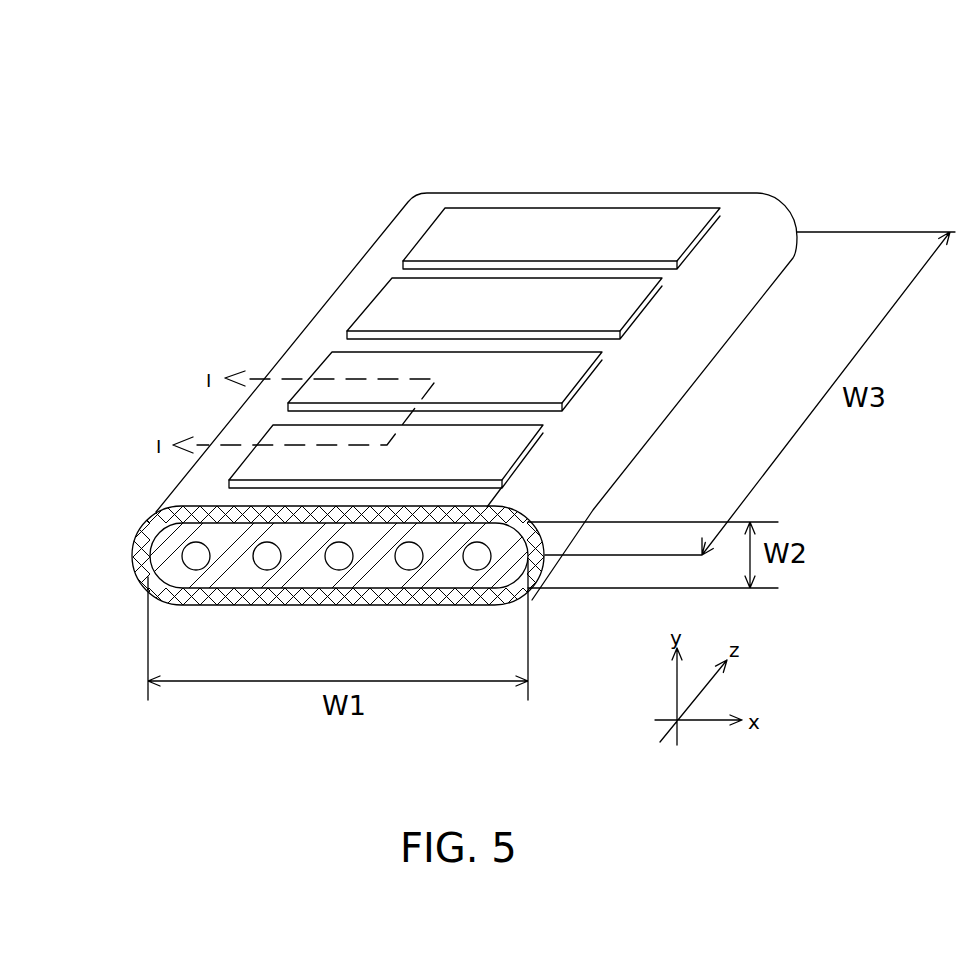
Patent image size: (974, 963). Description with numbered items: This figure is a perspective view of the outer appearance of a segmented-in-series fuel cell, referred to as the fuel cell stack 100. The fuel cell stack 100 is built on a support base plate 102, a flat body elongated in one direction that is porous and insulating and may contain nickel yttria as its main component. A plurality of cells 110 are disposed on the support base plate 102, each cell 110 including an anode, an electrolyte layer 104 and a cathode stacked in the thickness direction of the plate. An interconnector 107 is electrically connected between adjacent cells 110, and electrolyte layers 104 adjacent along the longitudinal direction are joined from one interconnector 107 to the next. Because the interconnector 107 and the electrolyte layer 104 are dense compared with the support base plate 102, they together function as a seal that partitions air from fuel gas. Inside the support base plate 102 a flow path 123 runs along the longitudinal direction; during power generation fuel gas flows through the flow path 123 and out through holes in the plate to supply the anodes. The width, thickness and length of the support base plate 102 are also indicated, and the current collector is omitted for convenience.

The fuel cell stack 100 is at (292, 125).
The support base plate 102 is at (475, 582).
The electrolyte layer 104 is at (533, 538).
The interconnector 107 is at (503, 418).
The cell 110 is at (438, 238).
The flow path 123 is at (339, 560).